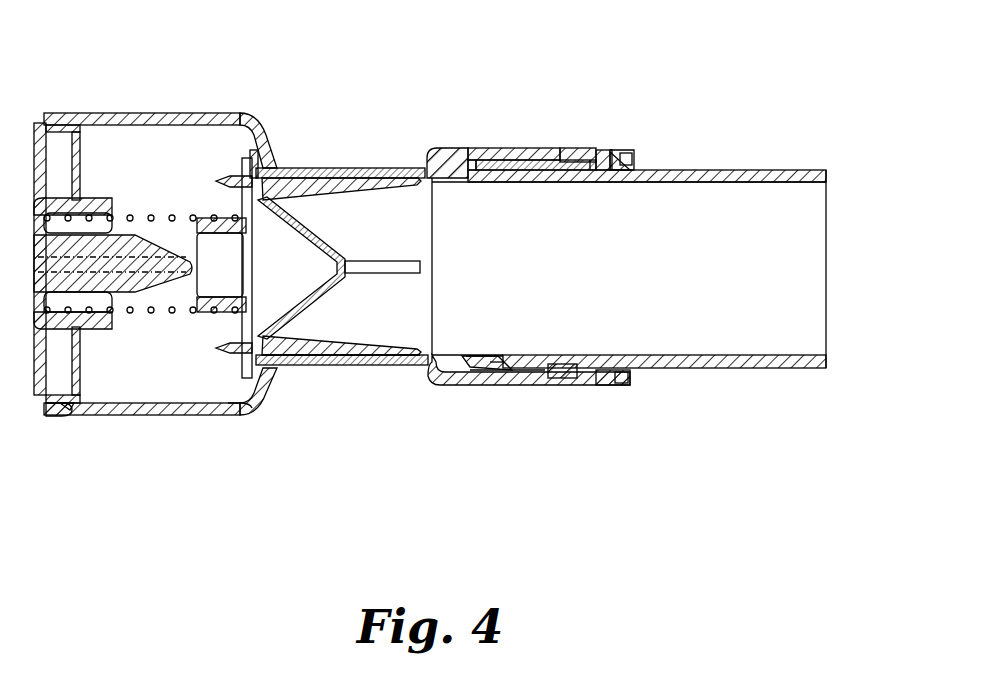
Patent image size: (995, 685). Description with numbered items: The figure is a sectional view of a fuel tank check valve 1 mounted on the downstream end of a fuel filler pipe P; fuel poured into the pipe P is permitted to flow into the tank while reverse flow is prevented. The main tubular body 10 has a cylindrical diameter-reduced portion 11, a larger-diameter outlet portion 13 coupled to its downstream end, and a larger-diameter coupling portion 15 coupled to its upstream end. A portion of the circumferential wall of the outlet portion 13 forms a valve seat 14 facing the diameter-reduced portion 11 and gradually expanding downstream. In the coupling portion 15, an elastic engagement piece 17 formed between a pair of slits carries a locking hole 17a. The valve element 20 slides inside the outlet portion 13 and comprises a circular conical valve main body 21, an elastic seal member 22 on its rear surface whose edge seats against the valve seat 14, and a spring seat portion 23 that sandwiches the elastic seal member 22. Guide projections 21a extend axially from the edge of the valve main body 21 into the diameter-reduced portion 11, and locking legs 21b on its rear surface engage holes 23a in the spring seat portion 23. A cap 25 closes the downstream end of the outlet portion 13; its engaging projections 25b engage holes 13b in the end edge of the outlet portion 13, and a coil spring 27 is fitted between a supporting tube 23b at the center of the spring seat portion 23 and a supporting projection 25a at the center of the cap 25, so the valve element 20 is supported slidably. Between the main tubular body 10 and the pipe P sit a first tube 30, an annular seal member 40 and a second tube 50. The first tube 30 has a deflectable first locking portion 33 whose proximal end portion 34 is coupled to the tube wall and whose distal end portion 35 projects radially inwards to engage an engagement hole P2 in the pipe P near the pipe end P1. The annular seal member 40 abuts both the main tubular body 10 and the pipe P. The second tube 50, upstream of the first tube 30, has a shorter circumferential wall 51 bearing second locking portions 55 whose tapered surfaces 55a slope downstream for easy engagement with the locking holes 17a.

The fuel tank check valve 1 is at (414, 90).
The main tubular body 10 is at (455, 396).
The diameter-reduced portion 11 is at (335, 362).
The outlet portion 13 is at (160, 414).
The holes 13b is at (74, 412).
The valve seat 14 is at (260, 398).
The coupling portion 15 is at (533, 380).
The elastic engagement piece 17 is at (631, 153).
The locking hole 17a is at (636, 160).
The valve element 20 is at (351, 222).
The valve main body 21 is at (303, 215).
The guide projections 21a is at (390, 185).
The locking legs 21b is at (232, 182).
The elastic seal member 22 is at (243, 414).
The spring seat portion 23 is at (238, 312).
The holes 23a is at (250, 172).
The supporting tube 23b is at (205, 308).
The cap 25 is at (34, 402).
The supporting projection 25a is at (143, 287).
The engaging projections 25b is at (66, 414).
The coil spring 27 is at (150, 214).
The first tube 30 is at (512, 148).
The first locking portion 33 is at (482, 355).
The proximal end portion 34 is at (498, 376).
The distal end portion 35 is at (475, 357).
The annular seal member 40 is at (548, 375).
The second tube 50 is at (575, 160).
The circumferential wall 51 is at (587, 178).
The second locking portion 55 is at (605, 158).
The tapered surface 55a is at (598, 155).
The fuel filler pipe P is at (796, 170).
The pipe end position P1 is at (480, 176).
The engagement hole P2 is at (496, 355).